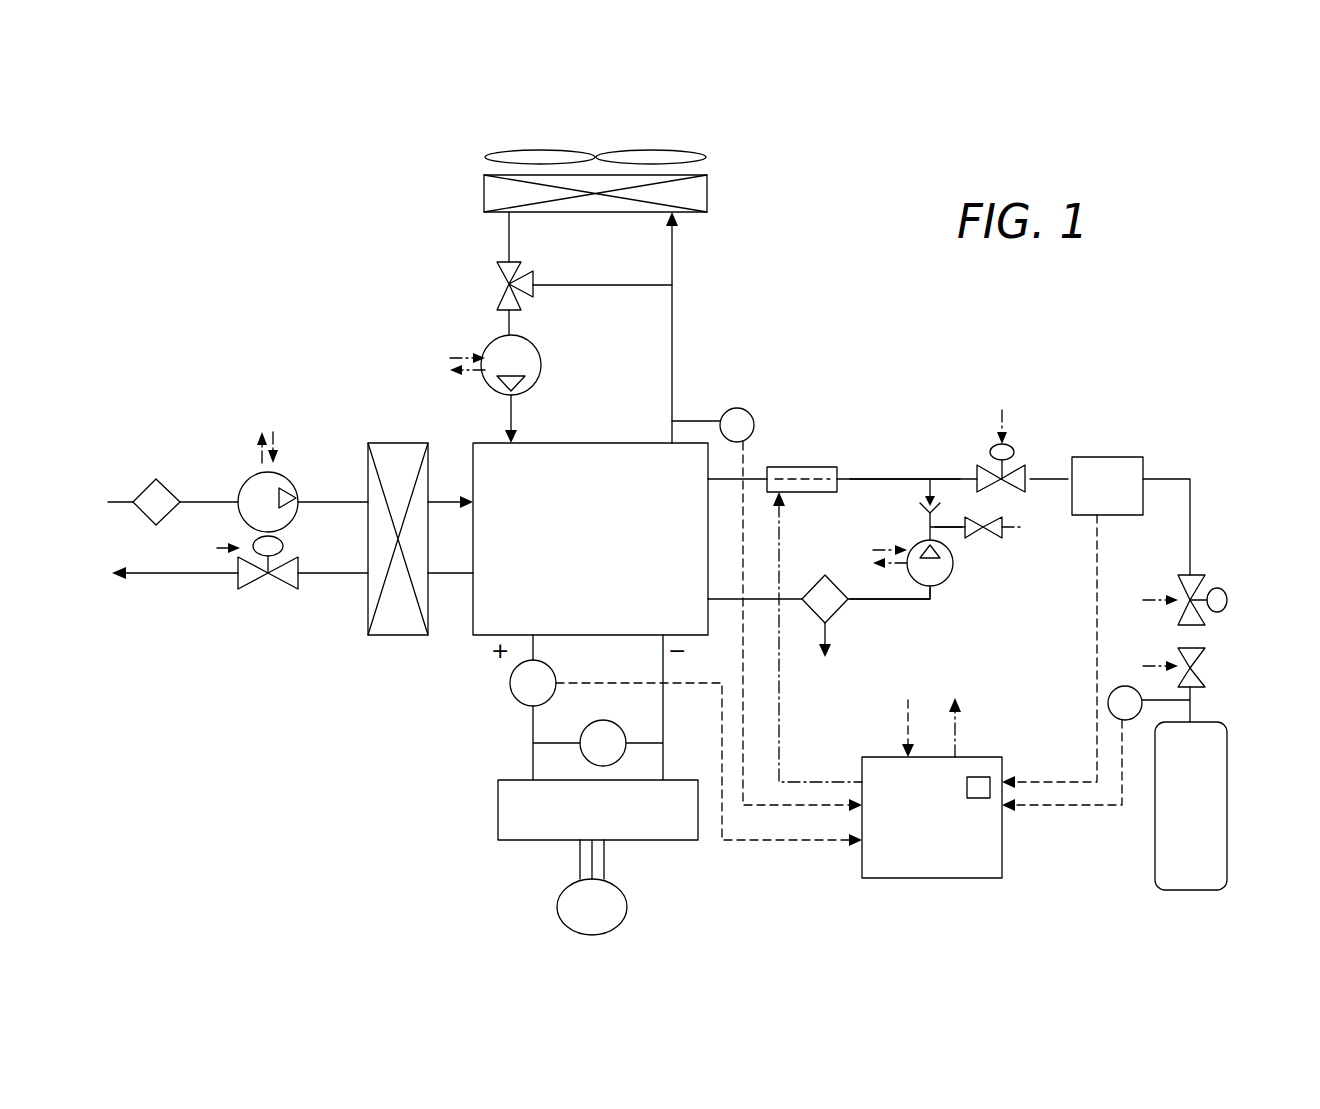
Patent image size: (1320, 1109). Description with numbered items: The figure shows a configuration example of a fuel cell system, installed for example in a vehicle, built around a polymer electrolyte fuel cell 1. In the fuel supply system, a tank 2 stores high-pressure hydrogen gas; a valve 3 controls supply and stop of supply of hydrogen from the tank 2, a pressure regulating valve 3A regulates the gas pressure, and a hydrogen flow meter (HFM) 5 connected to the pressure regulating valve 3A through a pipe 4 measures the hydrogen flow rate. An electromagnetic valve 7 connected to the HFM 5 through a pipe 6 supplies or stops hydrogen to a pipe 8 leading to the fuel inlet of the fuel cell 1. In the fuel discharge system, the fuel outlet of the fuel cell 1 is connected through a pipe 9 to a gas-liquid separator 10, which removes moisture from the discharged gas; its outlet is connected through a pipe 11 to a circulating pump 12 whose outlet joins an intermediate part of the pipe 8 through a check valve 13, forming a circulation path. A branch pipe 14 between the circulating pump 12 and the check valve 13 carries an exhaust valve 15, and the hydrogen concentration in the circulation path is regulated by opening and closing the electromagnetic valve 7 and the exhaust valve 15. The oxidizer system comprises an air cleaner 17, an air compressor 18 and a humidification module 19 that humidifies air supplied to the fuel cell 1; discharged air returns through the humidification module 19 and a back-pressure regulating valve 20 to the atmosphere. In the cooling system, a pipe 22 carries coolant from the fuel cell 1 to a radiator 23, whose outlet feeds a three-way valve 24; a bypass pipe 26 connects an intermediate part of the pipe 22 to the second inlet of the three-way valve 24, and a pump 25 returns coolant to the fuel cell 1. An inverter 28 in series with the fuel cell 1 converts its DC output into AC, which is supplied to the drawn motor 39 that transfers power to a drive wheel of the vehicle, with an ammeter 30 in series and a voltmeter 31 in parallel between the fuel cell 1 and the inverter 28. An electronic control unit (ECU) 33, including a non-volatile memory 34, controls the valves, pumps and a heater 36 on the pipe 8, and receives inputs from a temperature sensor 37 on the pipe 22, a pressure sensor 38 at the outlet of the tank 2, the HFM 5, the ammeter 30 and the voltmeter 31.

The fuel cell 1 is at (604, 441).
The tank 2 is at (1231, 740).
The valve 3 is at (1198, 653).
The pressure regulating valve 3A is at (1200, 580).
The pipe 4 is at (1194, 484).
The hydrogen flow meter (HFM) 5 is at (1088, 456).
The pipe 6 is at (1043, 476).
The electromagnetic valve 7 is at (1018, 450).
The pipe 8 is at (887, 478).
The pipe 9 is at (794, 598).
The gas-liquid separator 10 is at (835, 630).
The pipe 11 is at (900, 609).
The circulating pump 12 is at (951, 581).
The check valve 13 is at (921, 515).
The branch pipe 14 is at (944, 530).
The exhaust valve 15 is at (1005, 540).
The air cleaner 17 is at (172, 487).
The air compressor 18 is at (290, 480).
The humidification module 19 is at (393, 443).
The back-pressure regulating valve 20 is at (286, 574).
The pipe 22 is at (677, 357).
The radiator 23 is at (709, 195).
The three-way valve 24 is at (497, 297).
The pump 25 is at (542, 371).
The bypass pipe 26 is at (593, 292).
The inverter 28 is at (498, 819).
The ammeter (current sensor) 30 is at (511, 691).
The voltmeter 31 is at (619, 705).
The electronic control unit (ECU) 33 is at (918, 880).
The non-volatile memory 34 is at (983, 777).
The heater 36 is at (827, 466).
The temperature sensor 37 is at (754, 414).
The pressure sensor 38 is at (1118, 688).
The motor 39 is at (628, 899).